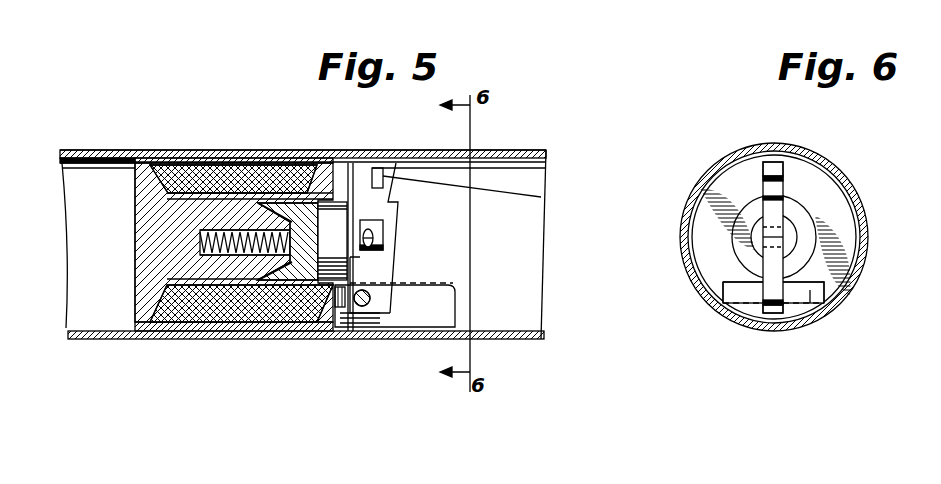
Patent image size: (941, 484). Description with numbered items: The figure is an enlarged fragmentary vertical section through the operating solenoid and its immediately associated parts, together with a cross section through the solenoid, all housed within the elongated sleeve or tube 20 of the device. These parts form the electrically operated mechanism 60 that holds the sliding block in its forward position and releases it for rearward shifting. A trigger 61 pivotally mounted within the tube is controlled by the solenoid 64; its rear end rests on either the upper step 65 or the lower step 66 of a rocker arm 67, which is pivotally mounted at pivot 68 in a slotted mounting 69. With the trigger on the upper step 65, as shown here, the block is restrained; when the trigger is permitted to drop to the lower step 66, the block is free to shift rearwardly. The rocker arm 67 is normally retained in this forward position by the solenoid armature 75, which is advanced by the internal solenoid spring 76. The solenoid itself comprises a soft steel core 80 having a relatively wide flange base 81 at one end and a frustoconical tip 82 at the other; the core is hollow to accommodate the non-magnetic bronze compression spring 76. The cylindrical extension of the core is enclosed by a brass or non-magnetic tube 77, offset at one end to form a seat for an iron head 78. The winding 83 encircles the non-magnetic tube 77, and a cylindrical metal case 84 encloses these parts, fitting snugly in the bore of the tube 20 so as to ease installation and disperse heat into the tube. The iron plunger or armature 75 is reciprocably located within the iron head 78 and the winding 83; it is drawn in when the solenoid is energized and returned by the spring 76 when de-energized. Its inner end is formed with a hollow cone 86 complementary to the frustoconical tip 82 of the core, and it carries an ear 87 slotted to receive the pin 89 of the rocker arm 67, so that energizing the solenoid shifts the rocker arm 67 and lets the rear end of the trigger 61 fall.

In FIG. 5, the sleeve or tube 20 is at (101, 150).
In FIG. 5, the electrically operated mechanism 60 is at (134, 190).
In FIG. 5, the trigger 61 is at (530, 190).
In FIG. 5, the solenoid 64 is at (163, 338).
In FIG. 6, the solenoid 64 is at (744, 190).
In FIG. 5, the upper step 65 is at (384, 185).
In FIG. 6, the upper step 65 is at (782, 165).
In FIG. 5, the lower step 66 is at (406, 194).
In FIG. 6, the lower step 66 is at (784, 190).
In FIG. 5, the rocker arm 67 is at (388, 268).
In FIG. 6, the rocker arm 67 is at (772, 314).
In FIG. 5, the pivot 68 is at (363, 307).
In FIG. 6, the pivot 68 is at (810, 303).
In FIG. 5, the slotted mounting 69 is at (432, 314).
In FIG. 6, the slotted mounting 69 is at (742, 305).
In FIG. 5, the solenoid armature 75 is at (332, 241).
In FIG. 6, the solenoid armature 75 is at (803, 220).
In FIG. 5, the solenoid spring 76 is at (202, 241).
In FIG. 5, the non-magnetic tube 77 is at (187, 192).
In FIG. 5, the iron head 78 is at (328, 323).
In FIG. 6, the iron head 78 is at (702, 245).
In FIG. 5, the core 80 is at (140, 229).
In FIG. 5, the flange base 81 is at (136, 313).
In FIG. 5, the frustoconical tip 82 is at (263, 265).
In FIG. 5, the winding 83 is at (213, 168).
In FIG. 5, the metal case 84 is at (260, 157).
In FIG. 6, the metal case 84 is at (699, 273).
In FIG. 5, the hollow cone 86 is at (282, 263).
In FIG. 5, the ear 87 is at (378, 237).
In FIG. 6, the ear 87 is at (757, 250).
In FIG. 5, the pin 89 is at (368, 229).
In FIG. 6, the pin 89 is at (800, 237).